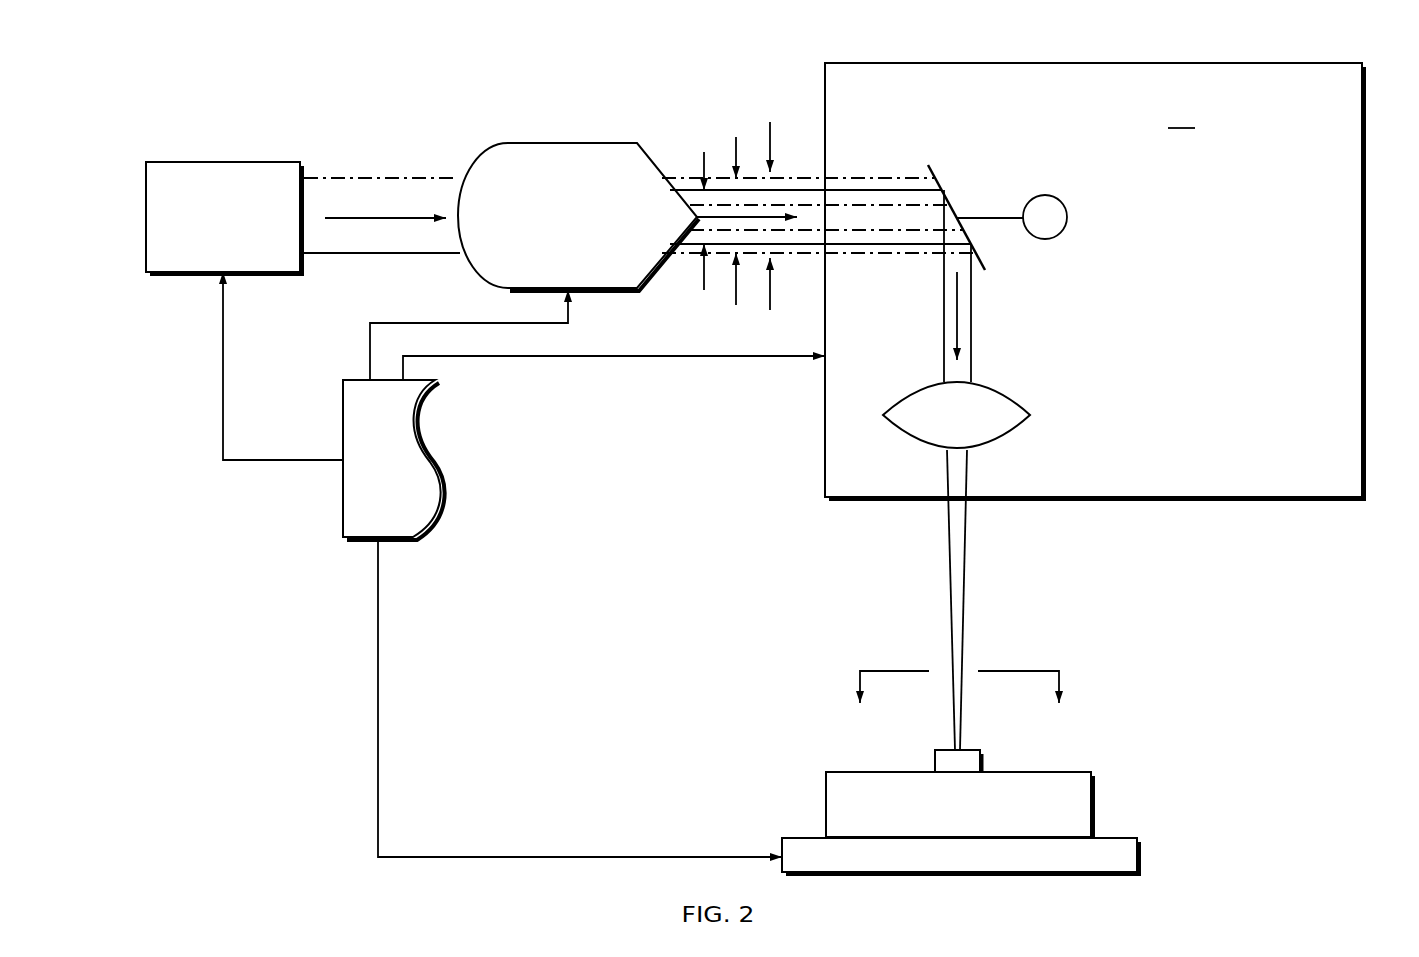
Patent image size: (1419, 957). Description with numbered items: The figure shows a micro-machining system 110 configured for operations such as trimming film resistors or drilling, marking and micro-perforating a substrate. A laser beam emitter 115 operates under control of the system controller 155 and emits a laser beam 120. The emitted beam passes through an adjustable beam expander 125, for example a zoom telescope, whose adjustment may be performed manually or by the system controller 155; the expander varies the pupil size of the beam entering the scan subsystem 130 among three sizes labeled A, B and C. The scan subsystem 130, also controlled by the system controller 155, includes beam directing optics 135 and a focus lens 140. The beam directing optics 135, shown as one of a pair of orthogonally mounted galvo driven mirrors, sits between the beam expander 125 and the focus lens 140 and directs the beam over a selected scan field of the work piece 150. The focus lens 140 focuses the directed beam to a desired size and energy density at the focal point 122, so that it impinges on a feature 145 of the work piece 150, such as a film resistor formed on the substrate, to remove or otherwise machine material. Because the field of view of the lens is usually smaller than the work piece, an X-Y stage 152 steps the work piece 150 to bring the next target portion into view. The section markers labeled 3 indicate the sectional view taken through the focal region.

The micro-machining system 110 is at (1302, 52).
The laser beam emitter 115 is at (240, 162).
The laser beam 120 is at (380, 178).
The adjustable beam expander 125 is at (595, 143).
The scan subsystem 130 is at (1094, 281).
The beam directing optics 135 is at (1060, 233).
The focus lens 140 is at (1012, 393).
The focal point 122 is at (955, 750).
The feature 145 is at (983, 762).
The work piece 150 is at (1095, 801).
The X-Y stage 152 is at (1140, 855).
The system controller 155 is at (343, 515).
The section line 3- 3 is at (961, 677).